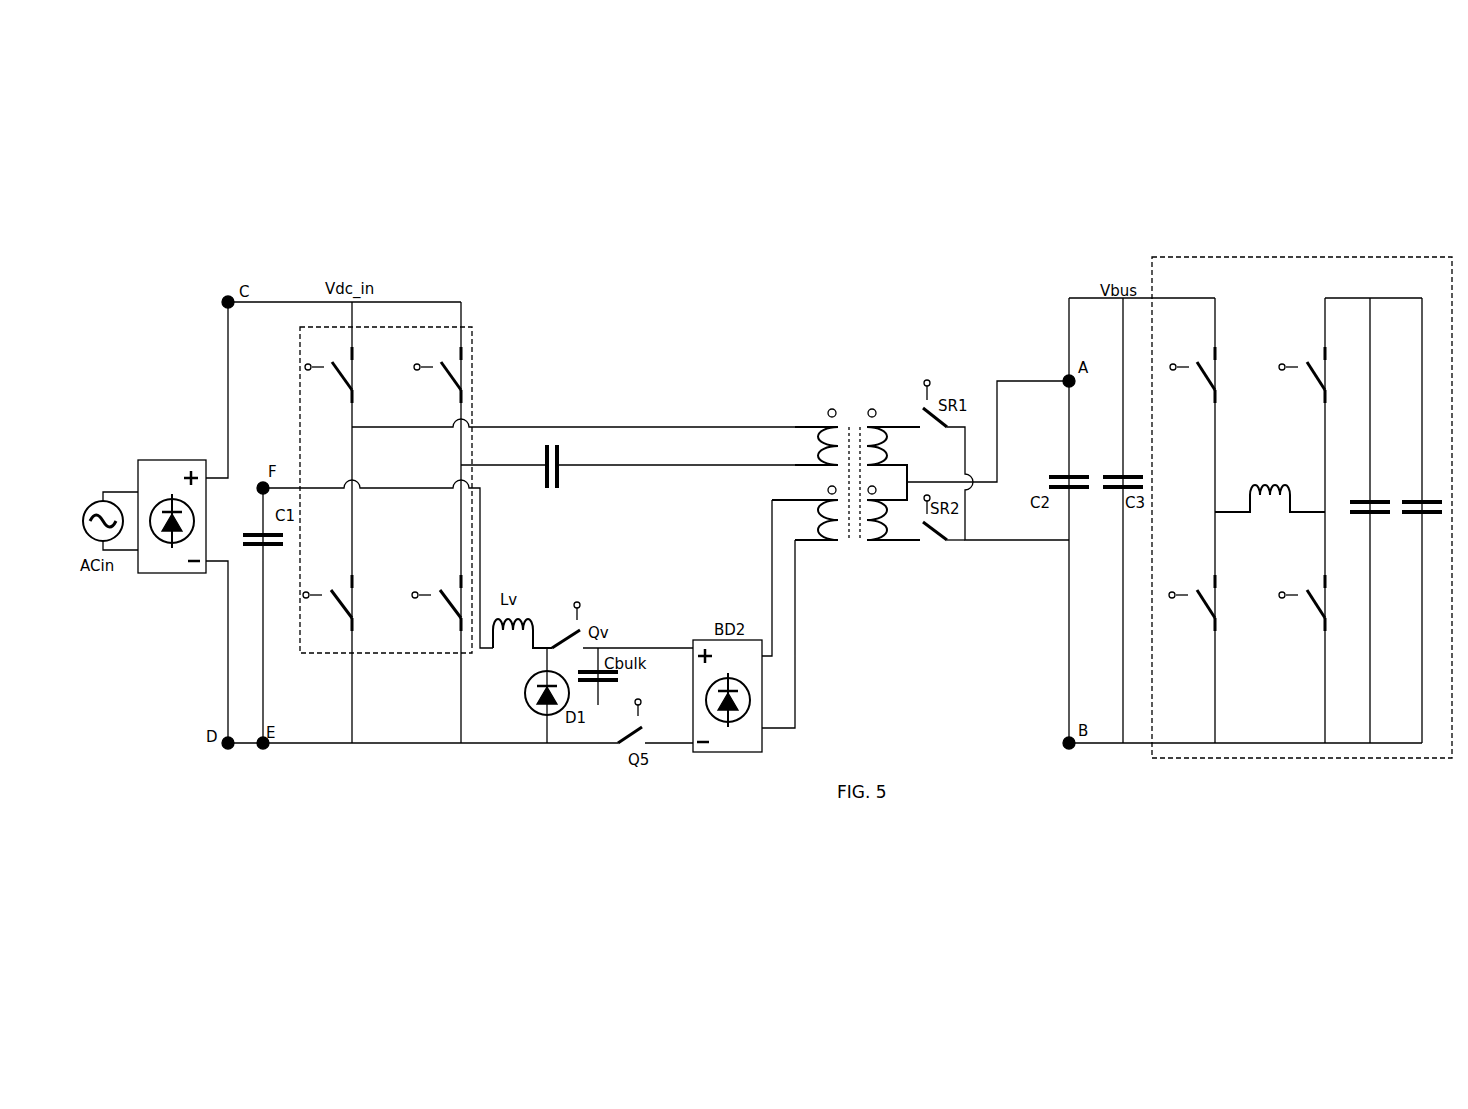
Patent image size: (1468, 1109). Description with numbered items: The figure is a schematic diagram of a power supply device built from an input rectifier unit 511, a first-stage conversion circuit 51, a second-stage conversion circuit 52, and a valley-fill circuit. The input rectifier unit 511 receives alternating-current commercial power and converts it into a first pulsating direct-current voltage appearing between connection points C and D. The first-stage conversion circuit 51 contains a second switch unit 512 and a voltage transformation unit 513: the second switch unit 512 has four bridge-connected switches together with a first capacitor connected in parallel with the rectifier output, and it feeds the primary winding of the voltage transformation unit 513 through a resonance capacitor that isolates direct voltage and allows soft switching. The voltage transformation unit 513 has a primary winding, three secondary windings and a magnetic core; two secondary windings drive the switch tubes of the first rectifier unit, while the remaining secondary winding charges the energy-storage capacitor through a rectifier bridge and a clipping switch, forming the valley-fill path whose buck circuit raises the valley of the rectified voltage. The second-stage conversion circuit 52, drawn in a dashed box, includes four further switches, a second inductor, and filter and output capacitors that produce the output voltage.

The first-stage conversion circuit 51 is at (662, 265).
The input rectifier unit 511 is at (172, 519).
The second switch unit 512 is at (473, 341).
The voltage transformation unit 513 is at (855, 412).
The second-stage conversion circuit 52 is at (1241, 257).